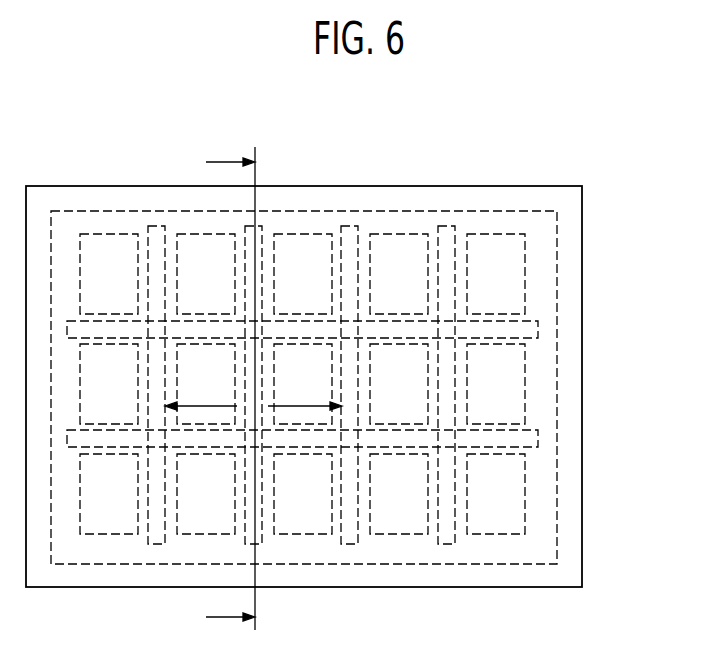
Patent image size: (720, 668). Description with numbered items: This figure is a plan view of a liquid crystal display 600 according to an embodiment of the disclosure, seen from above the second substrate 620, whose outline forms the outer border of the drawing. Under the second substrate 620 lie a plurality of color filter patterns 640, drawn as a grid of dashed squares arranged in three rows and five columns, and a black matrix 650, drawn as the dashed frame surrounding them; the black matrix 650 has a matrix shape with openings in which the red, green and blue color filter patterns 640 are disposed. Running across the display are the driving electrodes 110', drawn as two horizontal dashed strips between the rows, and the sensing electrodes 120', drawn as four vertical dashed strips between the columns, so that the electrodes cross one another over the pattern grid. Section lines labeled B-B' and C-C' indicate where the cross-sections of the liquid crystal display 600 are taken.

The liquid crystal display 600 is at (443, 131).
The second substrate 620 is at (548, 186).
The black matrix 650 is at (558, 437).
The color filter patterns 640 is at (510, 494).
The sensing electrodes 120' is at (287, 343).
The driving electrodes 110' is at (357, 380).